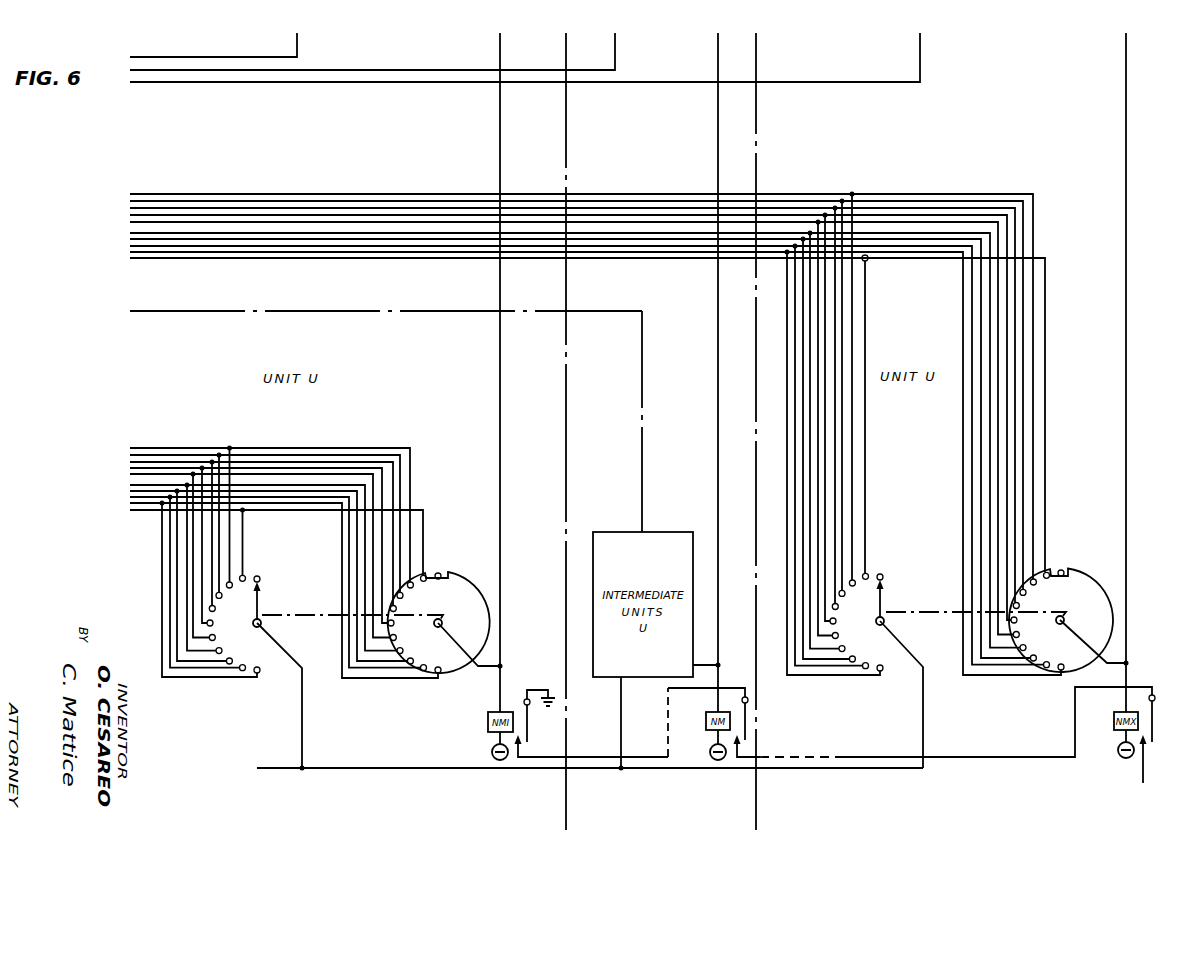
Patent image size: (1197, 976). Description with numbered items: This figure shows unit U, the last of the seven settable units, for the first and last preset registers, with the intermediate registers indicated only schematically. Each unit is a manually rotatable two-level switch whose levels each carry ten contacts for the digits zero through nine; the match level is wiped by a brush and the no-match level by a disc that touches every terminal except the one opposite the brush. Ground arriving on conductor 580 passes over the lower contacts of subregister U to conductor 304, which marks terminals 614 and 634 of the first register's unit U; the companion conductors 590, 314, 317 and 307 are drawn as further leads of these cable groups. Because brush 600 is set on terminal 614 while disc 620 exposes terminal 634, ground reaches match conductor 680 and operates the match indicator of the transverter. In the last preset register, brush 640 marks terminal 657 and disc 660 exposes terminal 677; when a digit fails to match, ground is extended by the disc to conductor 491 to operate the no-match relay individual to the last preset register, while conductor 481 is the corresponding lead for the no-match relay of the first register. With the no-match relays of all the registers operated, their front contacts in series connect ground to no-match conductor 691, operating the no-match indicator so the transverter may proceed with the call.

The conductor 580 is at (228, 56).
The conductor 590 is at (858, 84).
The cable conductors 314 is at (184, 215).
The cable conductors 317 is at (232, 243).
The conductor 304 is at (286, 464).
The cable conductors 307 is at (277, 492).
The conductor 481 is at (500, 413).
The conductor 491 is at (1125, 432).
The brush 600 is at (262, 604).
The terminal 614 is at (216, 638).
The disc 620 is at (463, 575).
The terminal 634 is at (394, 627).
The brush 640 is at (884, 600).
The terminal 657 is at (853, 655).
The disc 660 is at (1087, 572).
The terminal 677 is at (1035, 656).
The match conductor 680 is at (289, 774).
The no-match conductor 691 is at (1152, 760).